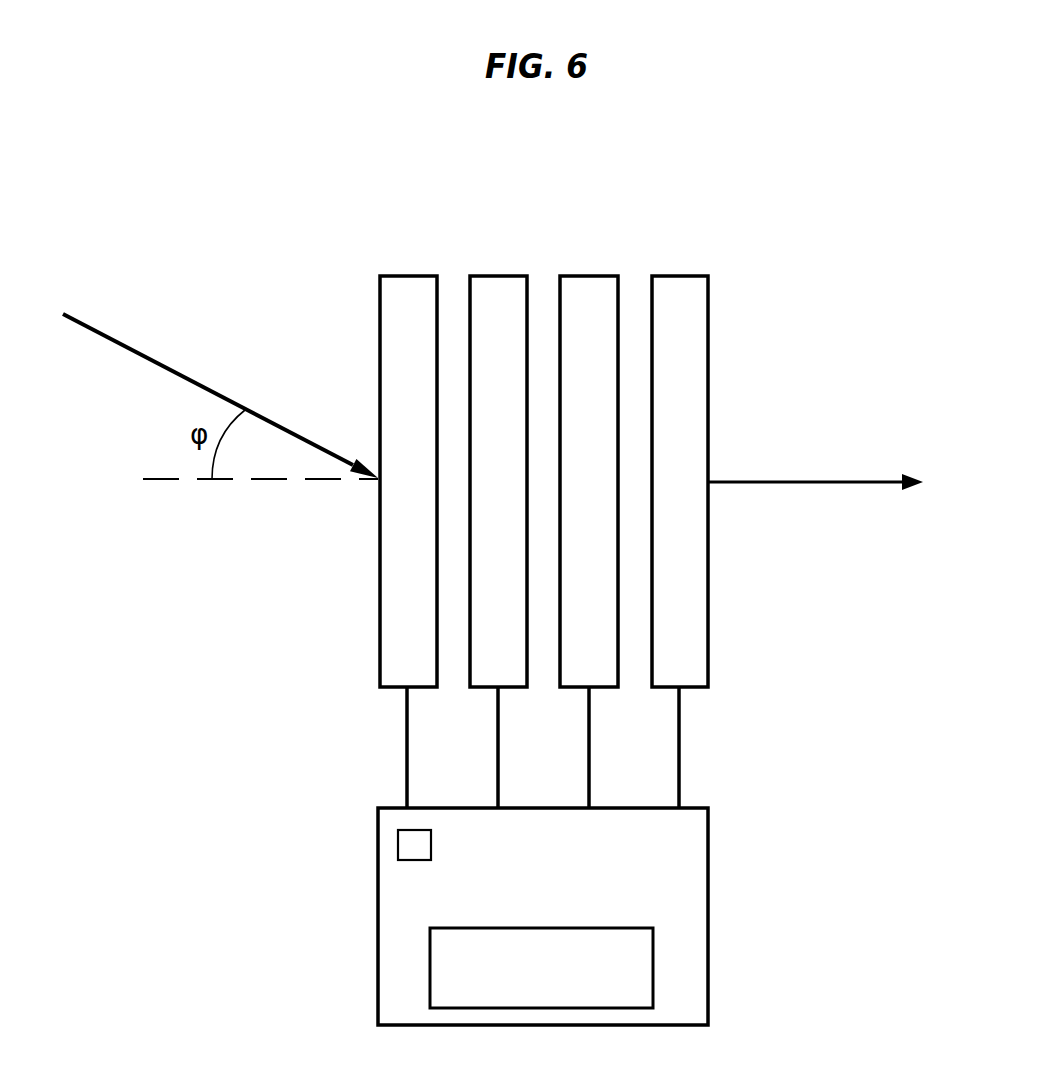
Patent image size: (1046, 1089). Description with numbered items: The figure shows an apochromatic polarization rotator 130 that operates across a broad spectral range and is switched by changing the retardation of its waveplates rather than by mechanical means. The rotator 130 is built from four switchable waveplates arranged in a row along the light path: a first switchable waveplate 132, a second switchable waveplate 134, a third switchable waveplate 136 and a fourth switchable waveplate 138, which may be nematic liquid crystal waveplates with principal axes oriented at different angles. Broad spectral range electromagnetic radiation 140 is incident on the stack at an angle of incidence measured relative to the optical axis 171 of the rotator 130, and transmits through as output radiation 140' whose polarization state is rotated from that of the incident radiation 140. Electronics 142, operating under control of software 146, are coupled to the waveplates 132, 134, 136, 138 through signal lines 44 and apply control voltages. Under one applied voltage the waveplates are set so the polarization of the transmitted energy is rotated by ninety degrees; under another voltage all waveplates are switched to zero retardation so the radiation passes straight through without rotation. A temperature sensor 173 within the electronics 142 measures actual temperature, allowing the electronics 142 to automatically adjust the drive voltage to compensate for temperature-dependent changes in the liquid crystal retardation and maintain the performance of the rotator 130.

The apochromatic polarization rotator 130 is at (226, 170).
The first switchable waveplate 132 is at (380, 663).
The second switchable waveplate 134 is at (708, 633).
The third switchable waveplate 136 is at (494, 274).
The fourth switchable waveplate 138 is at (605, 274).
The broad spectral range electromagnetic radiation 140 is at (220, 396).
The output radiation 140' is at (815, 509).
The optical axis 171 is at (163, 481).
The electrical connections 44 is at (498, 768).
The electronics 142 is at (567, 888).
The software 146 is at (567, 998).
The temperature sensor 173 is at (398, 842).